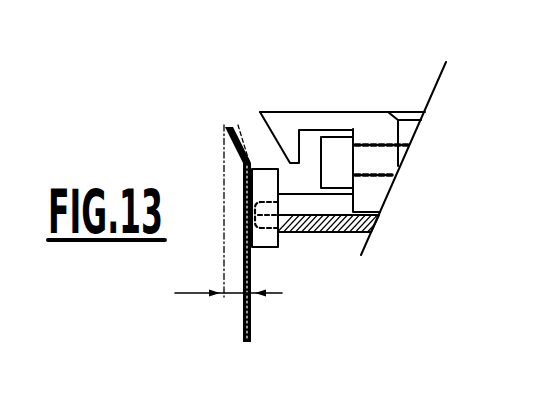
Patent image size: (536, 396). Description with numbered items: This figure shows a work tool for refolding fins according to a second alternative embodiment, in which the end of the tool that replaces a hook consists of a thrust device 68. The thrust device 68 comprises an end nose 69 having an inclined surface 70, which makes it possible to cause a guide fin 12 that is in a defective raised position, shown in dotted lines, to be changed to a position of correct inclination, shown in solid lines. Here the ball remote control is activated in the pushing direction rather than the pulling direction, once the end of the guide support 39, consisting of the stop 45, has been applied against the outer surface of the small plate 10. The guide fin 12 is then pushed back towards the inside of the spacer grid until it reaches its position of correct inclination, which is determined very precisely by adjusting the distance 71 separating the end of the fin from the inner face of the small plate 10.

The small plate 10 is at (243, 330).
The guide fin 12 is at (232, 155).
The guide support 39 is at (347, 233).
The stop 45 is at (263, 238).
The thrust device 68 is at (352, 120).
The end nose 69 is at (287, 133).
The inclined surface 70 is at (261, 131).
The distance 71 is at (228, 211).